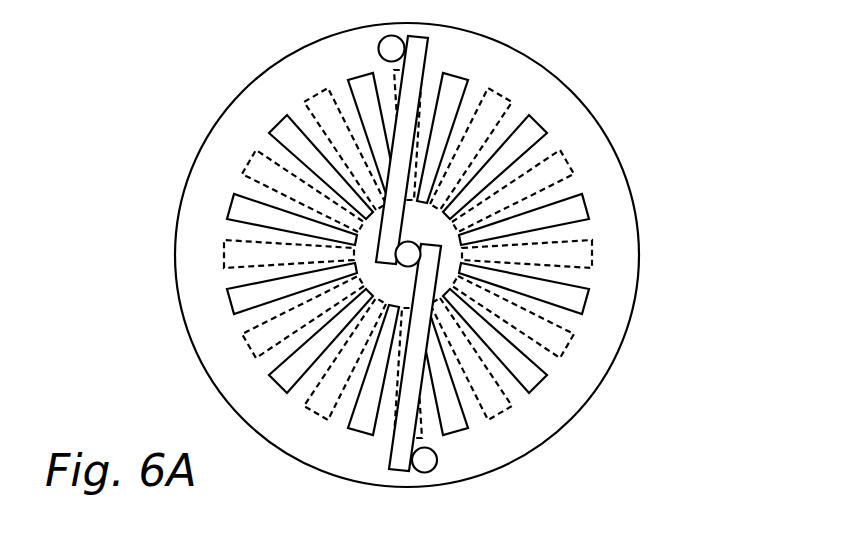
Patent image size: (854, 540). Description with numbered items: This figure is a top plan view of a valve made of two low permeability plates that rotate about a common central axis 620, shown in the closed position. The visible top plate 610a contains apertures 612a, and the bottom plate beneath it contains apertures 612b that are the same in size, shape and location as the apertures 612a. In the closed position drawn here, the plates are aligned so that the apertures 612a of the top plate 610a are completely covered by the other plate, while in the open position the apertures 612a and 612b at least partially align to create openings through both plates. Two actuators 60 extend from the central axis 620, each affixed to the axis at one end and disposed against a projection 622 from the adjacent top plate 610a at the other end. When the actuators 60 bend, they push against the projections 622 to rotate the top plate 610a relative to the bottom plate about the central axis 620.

The actuator 60 is at (430, 51).
The top plate 610a is at (238, 122).
The apertures 612a is at (542, 126).
The apertures 612b is at (497, 95).
The central axis 620 is at (412, 268).
The projection 622 is at (378, 50).